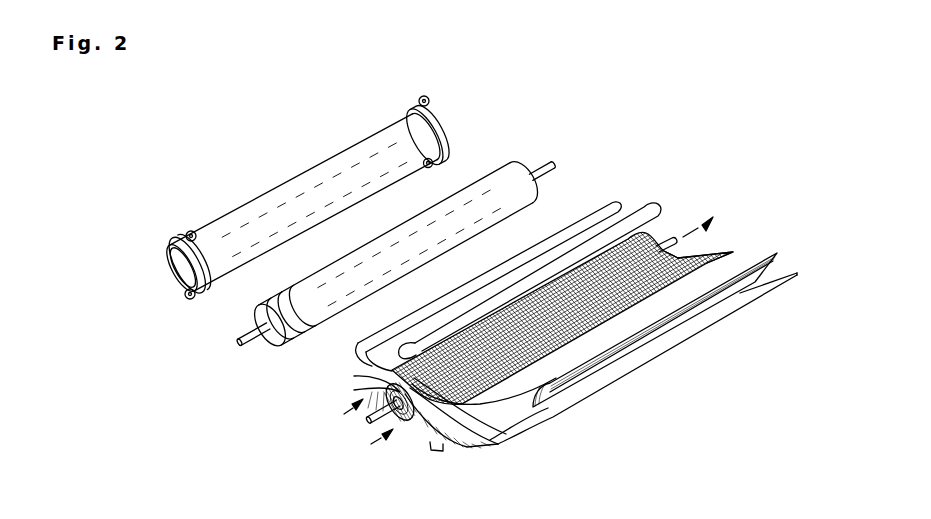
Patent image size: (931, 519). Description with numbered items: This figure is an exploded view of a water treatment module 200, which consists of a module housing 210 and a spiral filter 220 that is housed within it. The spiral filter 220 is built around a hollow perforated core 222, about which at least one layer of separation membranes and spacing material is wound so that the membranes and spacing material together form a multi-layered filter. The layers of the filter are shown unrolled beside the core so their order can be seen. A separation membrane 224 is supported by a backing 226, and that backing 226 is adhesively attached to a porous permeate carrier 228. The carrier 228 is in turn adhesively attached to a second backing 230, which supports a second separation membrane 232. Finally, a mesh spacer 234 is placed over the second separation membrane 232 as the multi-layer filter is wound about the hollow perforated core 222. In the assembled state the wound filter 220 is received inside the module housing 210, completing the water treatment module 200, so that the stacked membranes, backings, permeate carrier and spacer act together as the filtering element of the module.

The water treatment module 200 is at (283, 150).
The module housing 210 is at (168, 313).
The spiral filter 220 is at (306, 435).
The hollow perforated core 222 is at (340, 413).
The separation membrane 224 is at (437, 446).
The backing 226 is at (453, 444).
The porous permeate carrier 228 is at (510, 433).
The second backing 230 is at (573, 393).
The second separation membrane 232 is at (667, 323).
The mesh spacer 234 is at (697, 258).